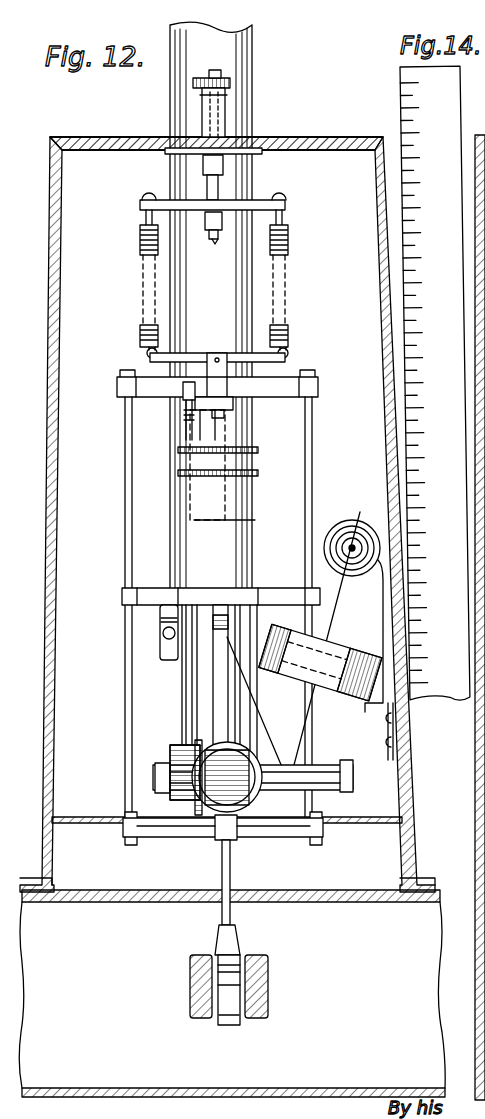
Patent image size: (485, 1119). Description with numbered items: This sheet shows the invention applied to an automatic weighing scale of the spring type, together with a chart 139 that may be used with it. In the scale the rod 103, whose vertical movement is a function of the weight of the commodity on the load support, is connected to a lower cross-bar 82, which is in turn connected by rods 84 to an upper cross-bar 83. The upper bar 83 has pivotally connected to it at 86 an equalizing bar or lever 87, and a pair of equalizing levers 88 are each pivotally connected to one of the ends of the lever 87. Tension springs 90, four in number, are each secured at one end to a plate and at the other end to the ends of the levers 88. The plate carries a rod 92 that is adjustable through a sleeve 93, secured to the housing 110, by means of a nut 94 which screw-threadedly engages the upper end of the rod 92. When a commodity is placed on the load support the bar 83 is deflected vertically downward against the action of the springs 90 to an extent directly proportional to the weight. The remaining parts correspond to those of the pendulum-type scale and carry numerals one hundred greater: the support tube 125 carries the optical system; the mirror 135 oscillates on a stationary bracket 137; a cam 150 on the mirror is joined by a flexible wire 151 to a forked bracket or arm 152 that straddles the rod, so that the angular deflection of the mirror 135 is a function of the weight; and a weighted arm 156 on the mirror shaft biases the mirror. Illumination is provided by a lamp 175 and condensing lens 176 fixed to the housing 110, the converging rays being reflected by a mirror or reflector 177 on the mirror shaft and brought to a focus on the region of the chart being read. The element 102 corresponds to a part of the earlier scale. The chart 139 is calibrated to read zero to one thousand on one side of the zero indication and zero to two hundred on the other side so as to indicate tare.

In FIG. 12, the cross-bar 82 is at (258, 837).
In FIG. 12, the cross-bar 83 is at (292, 377).
In FIG. 12, the rods 84 is at (129, 477).
In FIG. 12, the pivot connection 86 is at (215, 353).
In FIG. 12, the equalizing bar or lever 87 is at (150, 360).
In FIG. 12, the equalizing levers 88 is at (148, 350).
In FIG. 12, the tension springs 90 is at (142, 244).
In FIG. 12, the rod 92 is at (215, 190).
In FIG. 12, the sleeve 93 is at (222, 126).
In FIG. 12, the nut 94 is at (228, 86).
In FIG. 12, the base plate 102 is at (484, 956).
In FIG. 12, the rod 103 is at (222, 876).
In FIG. 12, the housing 110 is at (478, 844).
In FIG. 12, the support tube 125 is at (185, 170).
In FIG. 12, the mirror 135 is at (245, 758).
In FIG. 12, the stationary bracket 137 is at (262, 792).
In FIG. 12, the chart 139 is at (217, 678).
In FIG. 14, the chart 139 is at (400, 82).
In FIG. 12, the cam 150 is at (197, 805).
In FIG. 12, the flexible wire 151 is at (193, 662).
In FIG. 12, the forked bracket or arm 152 is at (203, 402).
In FIG. 12, the weighted arm 156 is at (172, 753).
In FIG. 12, the lamp 175 is at (350, 525).
In FIG. 12, the condensing lens 176 is at (330, 645).
In FIG. 12, the mirror or reflector 177 is at (300, 770).